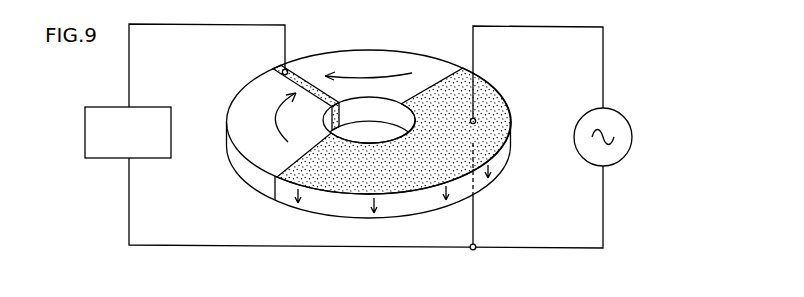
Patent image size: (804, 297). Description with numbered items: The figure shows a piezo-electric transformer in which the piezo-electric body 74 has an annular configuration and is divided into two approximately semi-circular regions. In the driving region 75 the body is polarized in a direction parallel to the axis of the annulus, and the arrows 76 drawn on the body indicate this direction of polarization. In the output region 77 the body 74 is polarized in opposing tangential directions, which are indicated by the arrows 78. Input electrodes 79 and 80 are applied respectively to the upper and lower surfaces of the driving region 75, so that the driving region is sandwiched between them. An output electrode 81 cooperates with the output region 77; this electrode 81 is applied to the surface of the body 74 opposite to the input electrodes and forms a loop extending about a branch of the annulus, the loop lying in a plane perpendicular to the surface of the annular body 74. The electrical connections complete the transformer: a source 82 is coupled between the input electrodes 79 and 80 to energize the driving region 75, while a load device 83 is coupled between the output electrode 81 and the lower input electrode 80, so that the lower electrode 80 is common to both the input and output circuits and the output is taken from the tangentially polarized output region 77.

The piezo-electric body 74 is at (441, 37).
The driving region 75 is at (503, 158).
The arrows 76 is at (500, 172).
The output region 77 is at (252, 171).
The arrows 78 is at (274, 113).
The input electrode 79 is at (493, 100).
The input electrode 80 is at (421, 203).
The output electrode 81 is at (298, 74).
The source 82 is at (618, 157).
The load device 83 is at (84, 130).